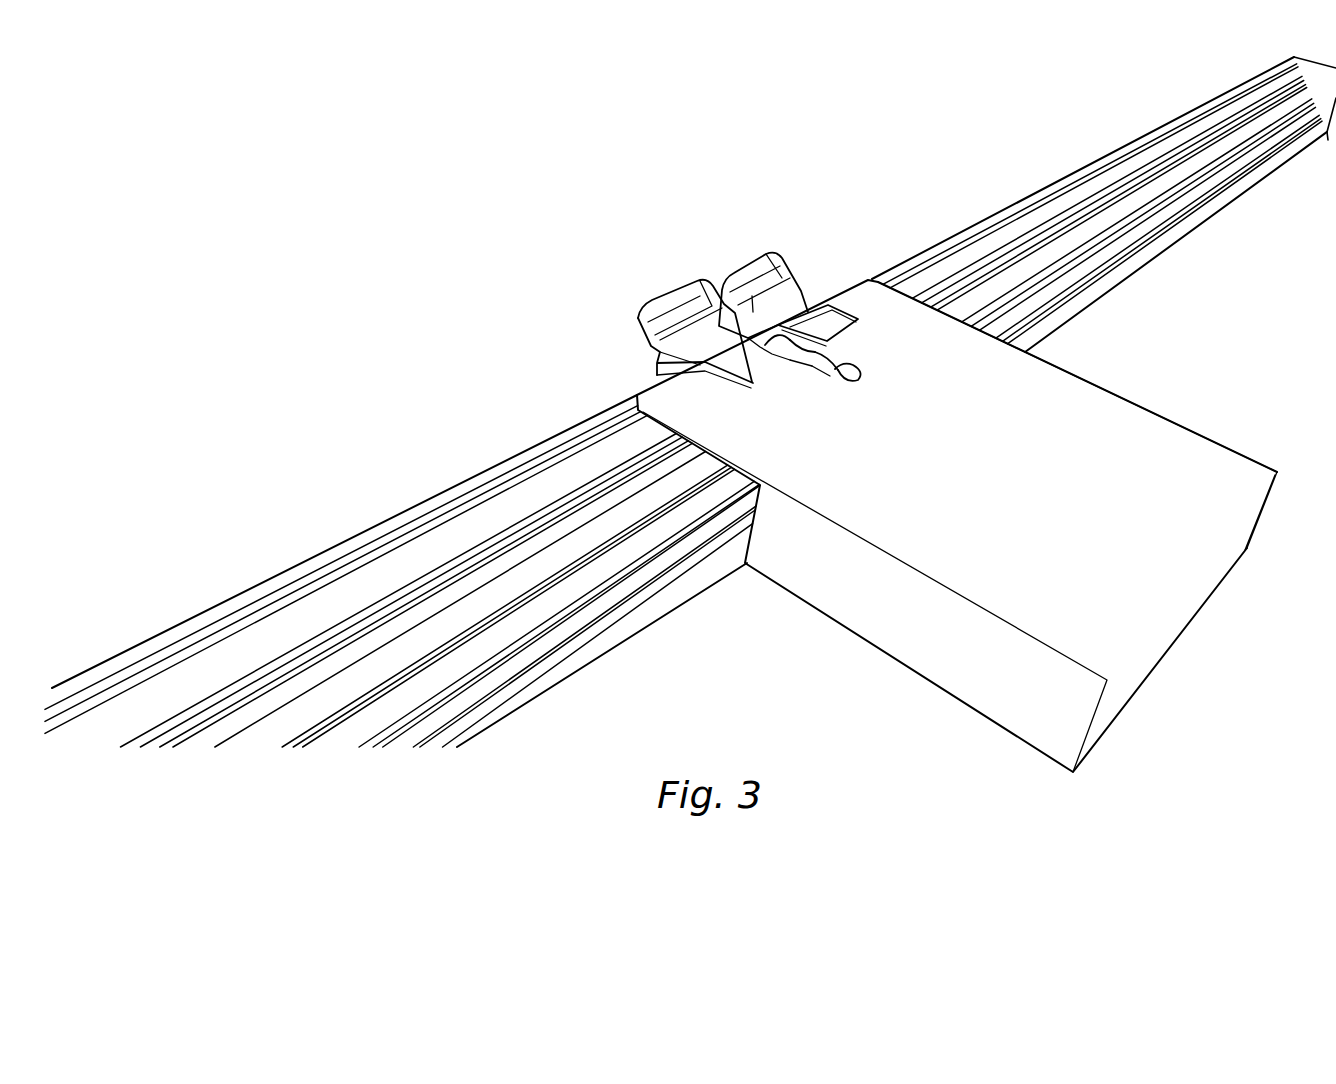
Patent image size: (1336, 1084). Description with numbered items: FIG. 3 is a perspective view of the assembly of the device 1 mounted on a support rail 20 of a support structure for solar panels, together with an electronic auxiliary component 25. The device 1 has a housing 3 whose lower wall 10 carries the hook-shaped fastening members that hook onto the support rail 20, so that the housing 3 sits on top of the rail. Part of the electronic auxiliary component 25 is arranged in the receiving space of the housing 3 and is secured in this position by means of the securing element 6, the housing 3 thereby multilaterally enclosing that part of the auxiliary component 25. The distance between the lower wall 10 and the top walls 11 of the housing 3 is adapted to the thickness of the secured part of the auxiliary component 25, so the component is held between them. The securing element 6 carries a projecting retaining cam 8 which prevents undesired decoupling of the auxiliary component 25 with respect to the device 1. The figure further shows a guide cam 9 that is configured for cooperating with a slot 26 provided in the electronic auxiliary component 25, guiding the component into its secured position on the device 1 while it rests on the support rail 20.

The device 1 is at (723, 328).
The housing 3 is at (821, 313).
The securing element 6 is at (797, 351).
The projecting retaining cam 8 is at (775, 344).
The guide cam 9 is at (848, 370).
The lower wall 10 is at (692, 362).
The top walls 11 is at (745, 353).
The support rail 20 is at (432, 486).
The electronic auxiliary component 25 is at (1206, 422).
The slot 26 is at (816, 364).